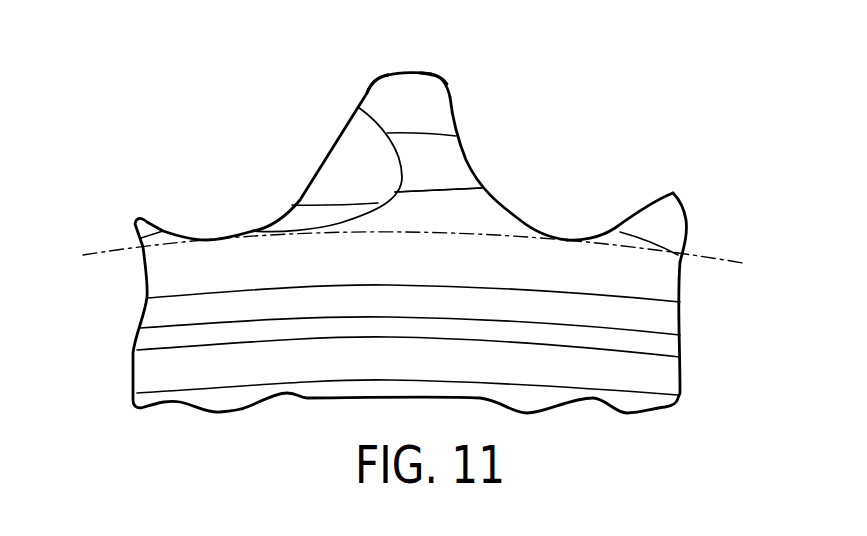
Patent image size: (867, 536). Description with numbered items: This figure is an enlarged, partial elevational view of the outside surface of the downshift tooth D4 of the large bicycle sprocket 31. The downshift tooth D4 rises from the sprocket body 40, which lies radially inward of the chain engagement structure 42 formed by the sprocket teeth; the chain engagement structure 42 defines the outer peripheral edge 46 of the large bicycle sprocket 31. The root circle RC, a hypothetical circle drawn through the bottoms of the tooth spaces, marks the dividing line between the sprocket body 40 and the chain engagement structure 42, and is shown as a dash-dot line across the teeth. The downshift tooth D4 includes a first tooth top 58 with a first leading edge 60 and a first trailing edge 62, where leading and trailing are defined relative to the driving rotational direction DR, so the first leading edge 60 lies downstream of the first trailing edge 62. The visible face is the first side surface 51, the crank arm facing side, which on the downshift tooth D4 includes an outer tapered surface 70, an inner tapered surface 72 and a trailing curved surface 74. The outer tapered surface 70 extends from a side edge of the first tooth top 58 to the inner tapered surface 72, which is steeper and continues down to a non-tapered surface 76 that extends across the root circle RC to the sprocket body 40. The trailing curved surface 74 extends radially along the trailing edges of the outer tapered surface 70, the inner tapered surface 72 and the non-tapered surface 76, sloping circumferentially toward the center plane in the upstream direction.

The large bicycle sprocket 31 is at (243, 225).
The sprocket body 40 is at (643, 403).
The chain engagement structure 42 is at (687, 212).
The outer peripheral edge 46 is at (600, 237).
The first side surface 51 is at (423, 275).
The first tooth top 58 is at (426, 76).
The first leading edge 60 is at (451, 98).
The first trailing edge 62 is at (366, 91).
The outer tapered surface 70 is at (408, 90).
The inner tapered surface 72 is at (443, 160).
The trailing curved surface 74 is at (357, 163).
The non-tapered surface 76 is at (453, 212).
The downshift tooth D4 is at (368, 68).
The root circle RC is at (110, 248).
The driving rotational direction DR is at (478, 419).